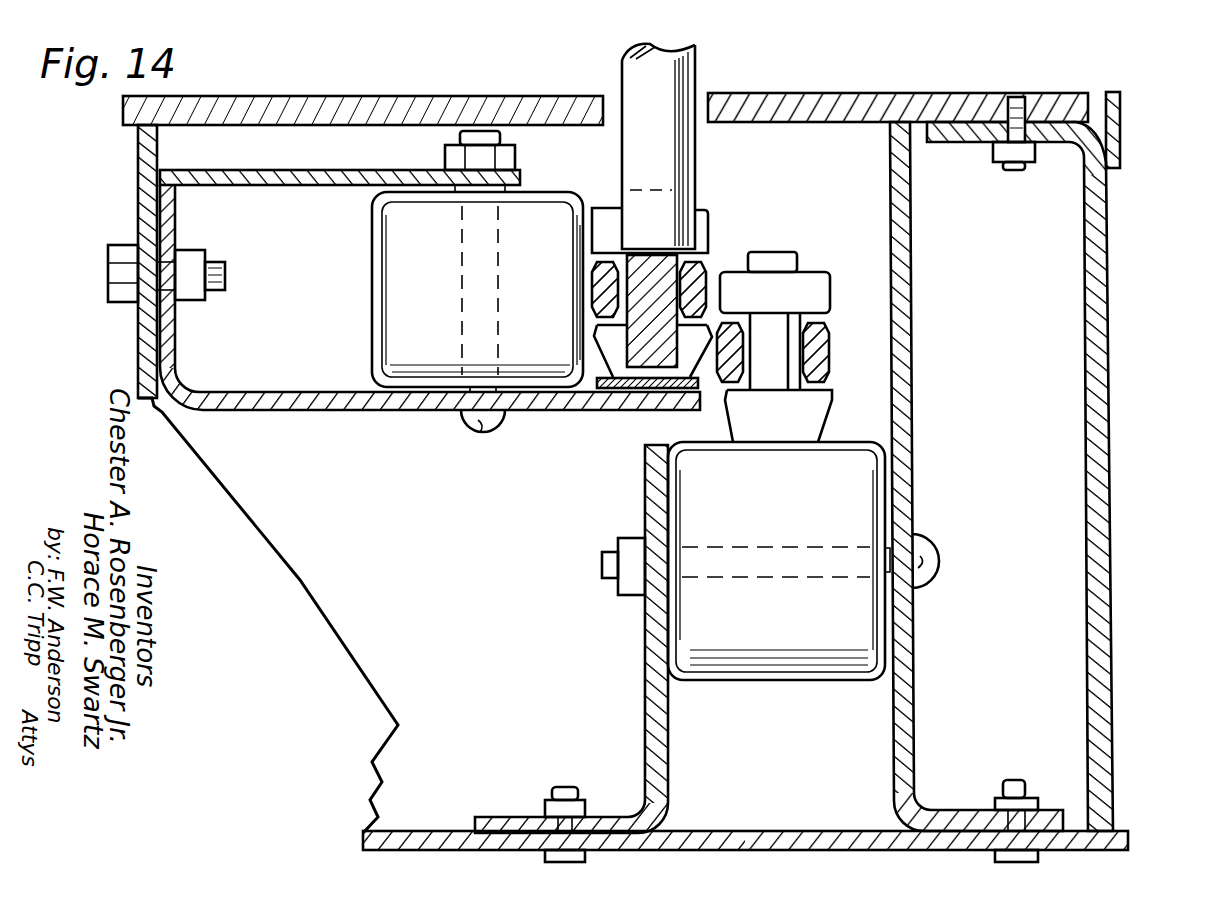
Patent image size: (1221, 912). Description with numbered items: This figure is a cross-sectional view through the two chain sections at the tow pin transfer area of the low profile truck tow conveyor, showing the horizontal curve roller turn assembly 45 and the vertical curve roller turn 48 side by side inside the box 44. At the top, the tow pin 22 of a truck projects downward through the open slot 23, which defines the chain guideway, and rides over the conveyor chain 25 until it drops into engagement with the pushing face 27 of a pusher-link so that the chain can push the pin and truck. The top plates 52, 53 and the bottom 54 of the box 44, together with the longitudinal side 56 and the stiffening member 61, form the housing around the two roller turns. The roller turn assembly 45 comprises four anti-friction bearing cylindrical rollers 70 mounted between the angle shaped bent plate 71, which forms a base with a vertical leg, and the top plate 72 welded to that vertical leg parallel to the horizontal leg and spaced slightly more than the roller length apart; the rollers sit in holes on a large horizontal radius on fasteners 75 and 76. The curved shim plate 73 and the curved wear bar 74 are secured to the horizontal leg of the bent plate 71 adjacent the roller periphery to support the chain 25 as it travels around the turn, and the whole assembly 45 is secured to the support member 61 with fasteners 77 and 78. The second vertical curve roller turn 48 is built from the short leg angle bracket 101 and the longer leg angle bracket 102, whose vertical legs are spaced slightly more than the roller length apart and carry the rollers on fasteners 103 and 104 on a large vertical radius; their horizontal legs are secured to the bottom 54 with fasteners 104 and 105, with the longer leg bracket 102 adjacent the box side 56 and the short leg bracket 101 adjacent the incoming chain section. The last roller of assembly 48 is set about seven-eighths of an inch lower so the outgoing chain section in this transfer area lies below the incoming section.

The tow pin 22 is at (697, 54).
The open slot 23 is at (698, 92).
The conveyor chain 25 is at (840, 343).
The pushing face 27 is at (710, 228).
The box 44 is at (1056, 477).
The first horizontal curve roller turn assembly 45 is at (430, 310).
The second vertical curve roller turn 48 is at (634, 637).
The right top plate 52 is at (852, 93).
The left top plate 53 is at (500, 58).
The bottom 54 is at (442, 831).
The longitudinal side 56 is at (1112, 530).
The stiffening member 61 is at (137, 205).
The anti-friction bearing cylindrical roller 70 is at (367, 280).
The angle shaped bent plate 71 is at (230, 412).
The top plate 72 is at (228, 172).
The curved shim plate 73 is at (645, 400).
The curved wear bar 74 is at (698, 383).
The fastener 75 is at (460, 430).
The fastener 76 is at (510, 158).
The fastener 77 is at (108, 270).
The fastener 78 is at (196, 300).
The short leg angle bracket 101 is at (645, 678).
The longer leg angle bracket 102 is at (916, 708).
The fastener 103 is at (926, 585).
The fastener 104 is at (625, 540).
The fastener 105 is at (586, 803).